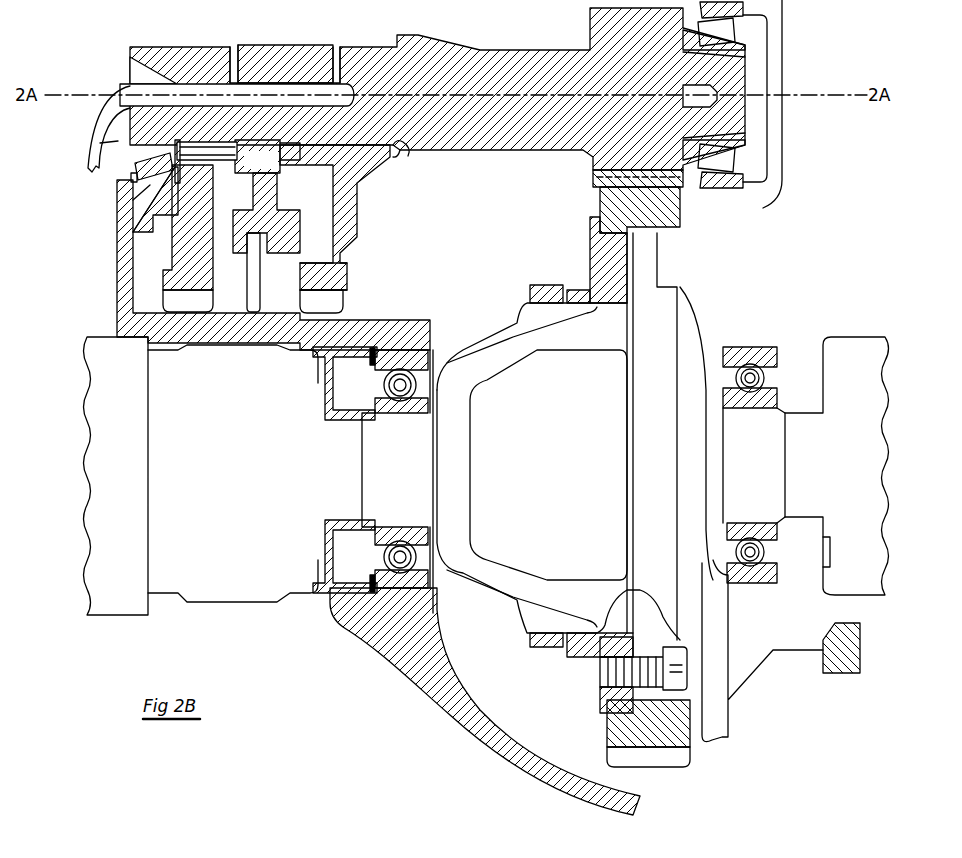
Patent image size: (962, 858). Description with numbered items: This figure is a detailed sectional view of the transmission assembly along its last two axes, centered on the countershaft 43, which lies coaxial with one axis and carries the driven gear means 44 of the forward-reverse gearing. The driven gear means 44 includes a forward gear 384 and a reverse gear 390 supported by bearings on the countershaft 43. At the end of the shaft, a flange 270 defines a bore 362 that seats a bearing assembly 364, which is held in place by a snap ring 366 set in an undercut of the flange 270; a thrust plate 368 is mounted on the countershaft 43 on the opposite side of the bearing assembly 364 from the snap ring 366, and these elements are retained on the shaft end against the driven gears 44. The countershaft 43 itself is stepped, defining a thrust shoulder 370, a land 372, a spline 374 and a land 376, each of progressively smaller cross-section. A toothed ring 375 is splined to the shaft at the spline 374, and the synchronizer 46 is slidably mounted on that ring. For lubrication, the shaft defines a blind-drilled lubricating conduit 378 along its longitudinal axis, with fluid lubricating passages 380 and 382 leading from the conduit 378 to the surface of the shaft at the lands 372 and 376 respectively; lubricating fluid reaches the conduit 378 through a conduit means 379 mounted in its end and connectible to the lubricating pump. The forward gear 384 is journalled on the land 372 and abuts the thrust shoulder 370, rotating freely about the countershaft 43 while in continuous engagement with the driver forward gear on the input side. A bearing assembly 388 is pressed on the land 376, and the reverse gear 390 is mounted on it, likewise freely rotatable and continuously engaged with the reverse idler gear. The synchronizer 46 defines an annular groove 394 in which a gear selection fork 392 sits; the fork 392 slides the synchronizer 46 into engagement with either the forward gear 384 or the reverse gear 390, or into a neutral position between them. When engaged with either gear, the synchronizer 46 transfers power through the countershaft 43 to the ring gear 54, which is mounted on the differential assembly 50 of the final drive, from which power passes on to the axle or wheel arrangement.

The countershaft 43 is at (557, 157).
The driven gear means 44 is at (362, 243).
The synchronizer 46 is at (285, 232).
The differential assembly 50 is at (695, 306).
The ring gear 54 is at (682, 222).
The flange 270 is at (117, 295).
The bore 362 is at (120, 199).
The bearing assembly 364 is at (100, 146).
The snap ring 366 is at (130, 176).
The thrust plate 368 is at (116, 217).
The thrust shoulder 370 is at (397, 157).
The land 372 is at (405, 151).
The spline 374 is at (272, 143).
The toothed ring 375 is at (257, 156).
The land 376 is at (211, 143).
The lubricating conduit 378 is at (292, 47).
The conduit means 379 is at (103, 118).
The fluid lubricating passage 380 is at (337, 47).
The fluid lubricating passage 382 is at (232, 48).
The forward gear 384 is at (345, 305).
The bearing assembly 388 is at (196, 143).
The reverse gear 390 is at (172, 236).
The gear selection fork 392 is at (260, 262).
The groove 394 is at (249, 236).